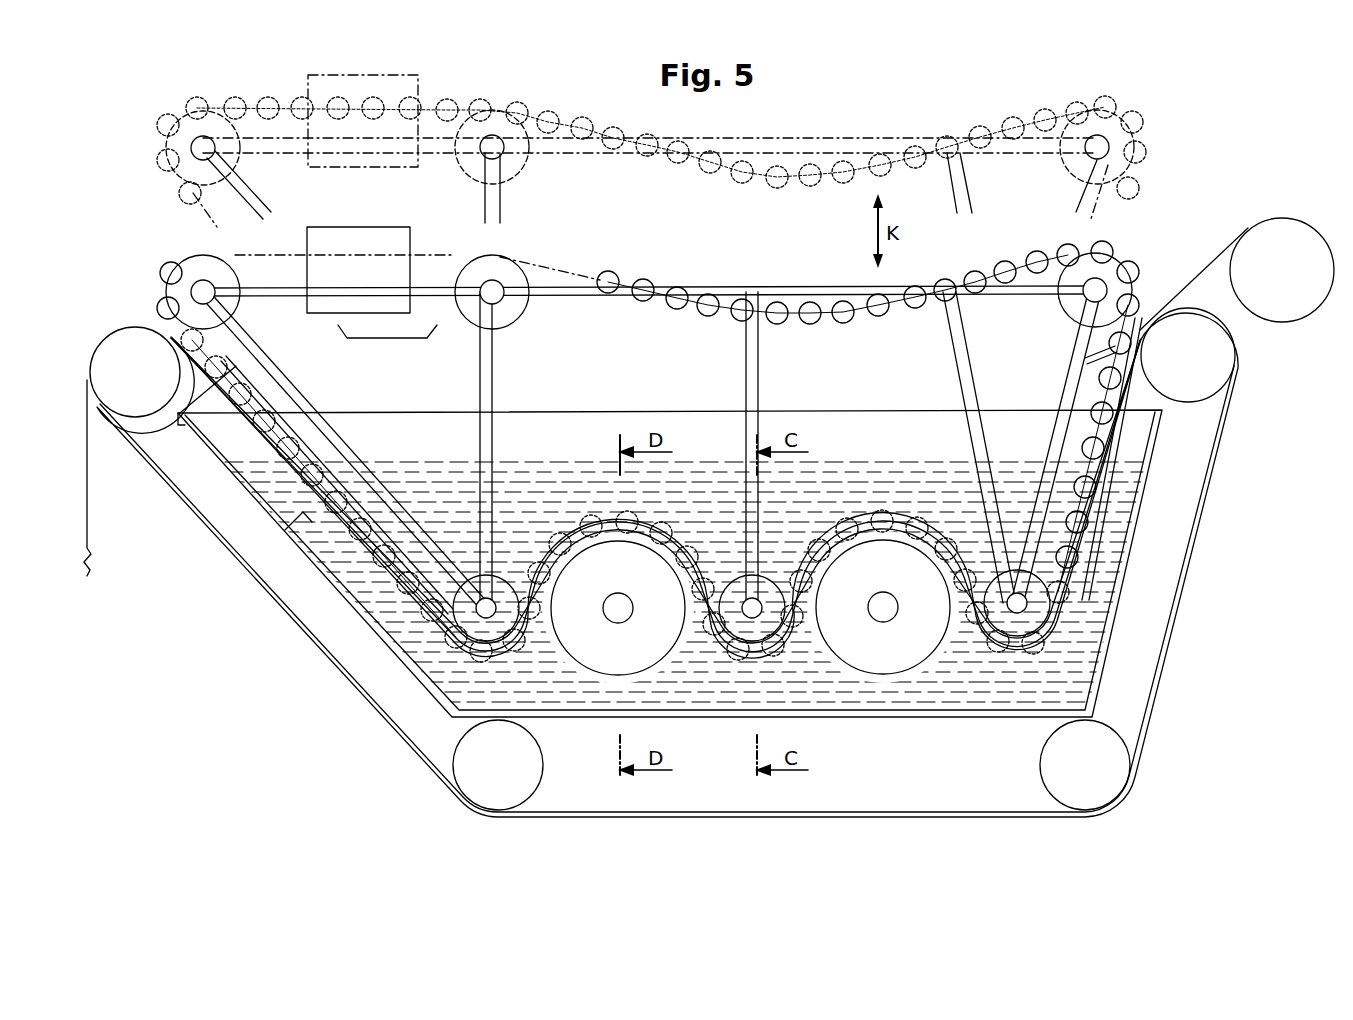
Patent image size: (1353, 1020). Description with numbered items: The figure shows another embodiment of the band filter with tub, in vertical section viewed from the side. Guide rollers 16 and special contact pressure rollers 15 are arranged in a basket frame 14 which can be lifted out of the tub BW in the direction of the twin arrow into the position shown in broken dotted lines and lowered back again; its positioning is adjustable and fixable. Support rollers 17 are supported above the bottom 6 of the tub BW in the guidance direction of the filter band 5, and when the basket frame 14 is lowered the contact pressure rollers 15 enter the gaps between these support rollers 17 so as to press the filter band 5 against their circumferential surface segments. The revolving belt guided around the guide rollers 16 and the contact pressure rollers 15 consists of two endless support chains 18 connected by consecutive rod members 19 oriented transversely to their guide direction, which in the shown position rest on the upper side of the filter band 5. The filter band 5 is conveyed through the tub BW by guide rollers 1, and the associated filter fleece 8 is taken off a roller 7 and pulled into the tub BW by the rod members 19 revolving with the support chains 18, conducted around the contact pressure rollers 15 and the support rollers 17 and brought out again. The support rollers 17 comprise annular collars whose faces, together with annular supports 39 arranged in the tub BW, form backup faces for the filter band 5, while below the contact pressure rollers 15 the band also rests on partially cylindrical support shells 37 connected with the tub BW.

The guide rollers 1 is at (130, 343).
The filter band 5 is at (1085, 565).
The bottom 6 is at (875, 714).
The roller 7 is at (1265, 245).
The filter fleece 8 is at (1187, 288).
The basket frame 14 is at (498, 380).
The contact pressure rollers 15 is at (480, 648).
The guide rollers 16 is at (195, 267).
The support rollers 17 is at (655, 640).
The endless support chains 18 is at (575, 272).
The rod members 19 is at (810, 302).
The support shells 37 is at (520, 655).
The annular supports 39 is at (566, 650).
The tub BW is at (1112, 490).